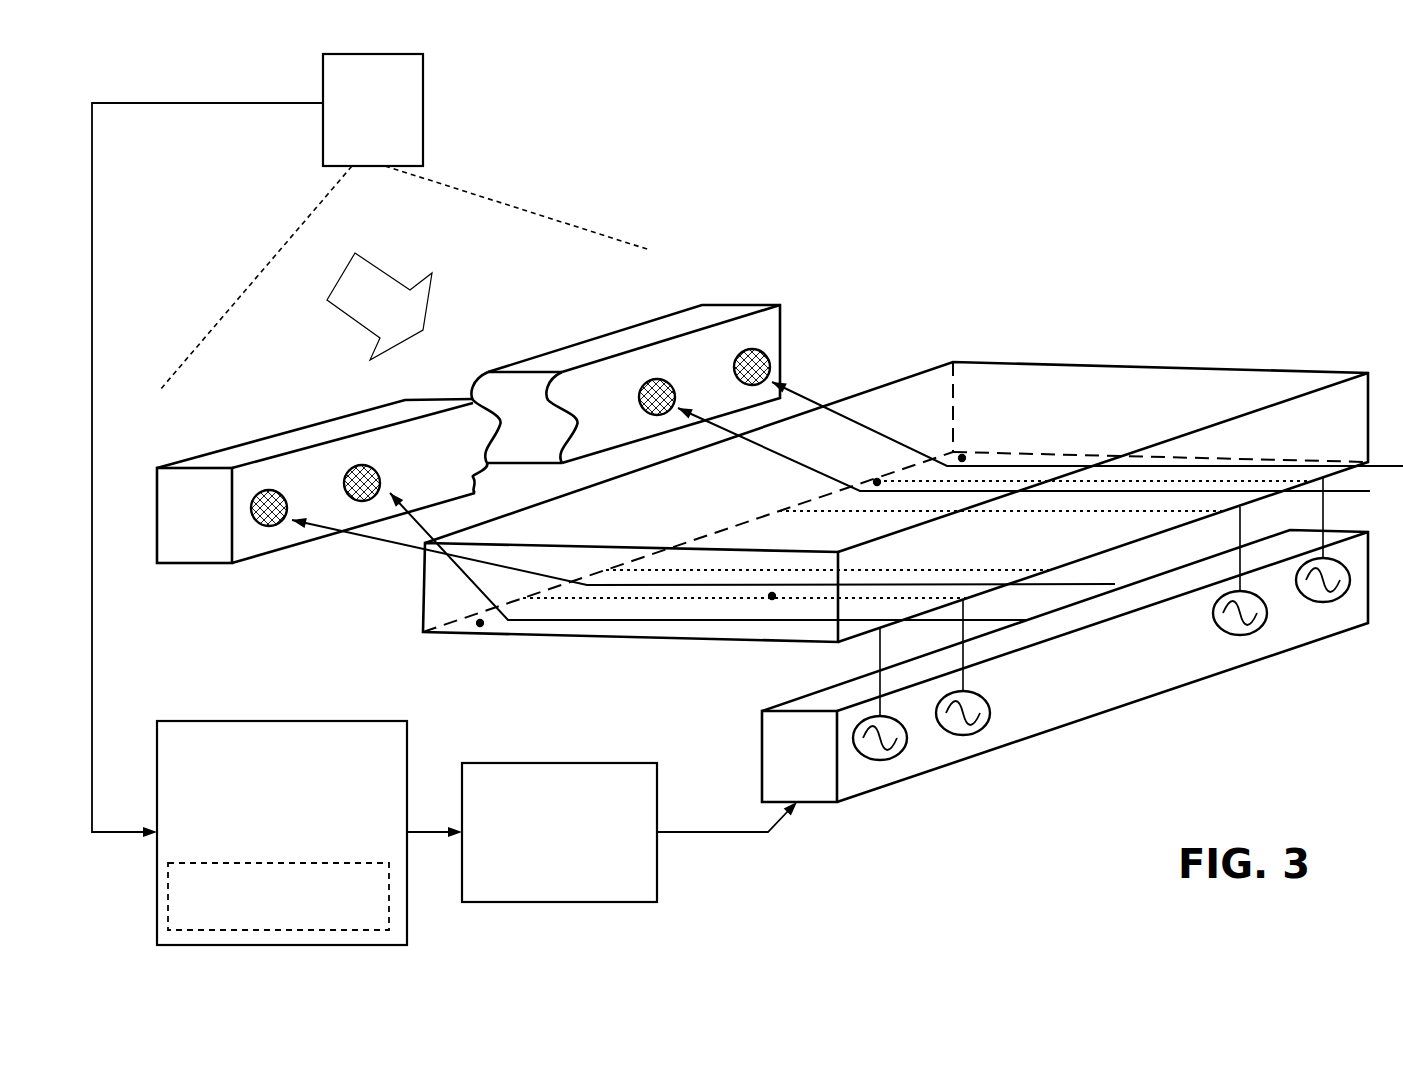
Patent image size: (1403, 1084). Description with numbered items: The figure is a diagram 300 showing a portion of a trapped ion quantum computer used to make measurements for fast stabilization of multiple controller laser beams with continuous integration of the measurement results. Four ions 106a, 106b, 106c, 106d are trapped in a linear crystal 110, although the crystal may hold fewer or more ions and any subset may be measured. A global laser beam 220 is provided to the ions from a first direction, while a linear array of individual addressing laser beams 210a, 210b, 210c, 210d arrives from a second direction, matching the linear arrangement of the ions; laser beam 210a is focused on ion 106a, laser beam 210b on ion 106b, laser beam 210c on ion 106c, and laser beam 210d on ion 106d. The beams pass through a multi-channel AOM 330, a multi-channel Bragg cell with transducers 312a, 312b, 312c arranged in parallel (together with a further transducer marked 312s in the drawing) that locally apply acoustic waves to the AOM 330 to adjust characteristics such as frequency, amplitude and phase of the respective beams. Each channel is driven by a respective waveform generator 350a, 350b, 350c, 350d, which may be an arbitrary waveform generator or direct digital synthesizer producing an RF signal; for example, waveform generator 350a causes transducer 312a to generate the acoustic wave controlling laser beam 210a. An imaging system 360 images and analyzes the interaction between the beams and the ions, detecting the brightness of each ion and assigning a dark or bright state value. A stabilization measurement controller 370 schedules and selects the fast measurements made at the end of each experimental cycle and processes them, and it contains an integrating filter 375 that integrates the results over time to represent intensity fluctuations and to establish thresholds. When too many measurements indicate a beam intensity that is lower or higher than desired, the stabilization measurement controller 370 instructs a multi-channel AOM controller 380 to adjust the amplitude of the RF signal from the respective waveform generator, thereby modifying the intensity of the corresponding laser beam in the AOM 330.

The diagram 300 is at (1040, 110).
The imaging system 360 is at (371, 445).
The global laser beam 220 is at (406, 290).
The linear crystal 110 is at (193, 563).
The ion 106a is at (262, 493).
The ion 106b is at (355, 468).
The ion 106c is at (650, 381).
The ion 106d is at (746, 352).
The laser beam 210a is at (308, 530).
The laser beam 210b is at (443, 520).
The laser beam 210c is at (818, 473).
The laser beam 210d is at (817, 405).
The multi-channel AOM 330 is at (1220, 362).
The transducer 312a is at (475, 627).
The transducer 312b is at (768, 600).
The transducer 312c is at (879, 479).
The beam entry spot s 312s is at (963, 456).
The waveform generator 350a is at (880, 760).
The waveform generator 350b is at (963, 735).
The waveform generator 350c is at (1242, 635).
The waveform generator 350d is at (1323, 602).
The stabilization measurement controller 370 is at (309, 833).
The integrating filter 375 is at (278, 896).
The multi-channel AOM controller 380 is at (629, 832).